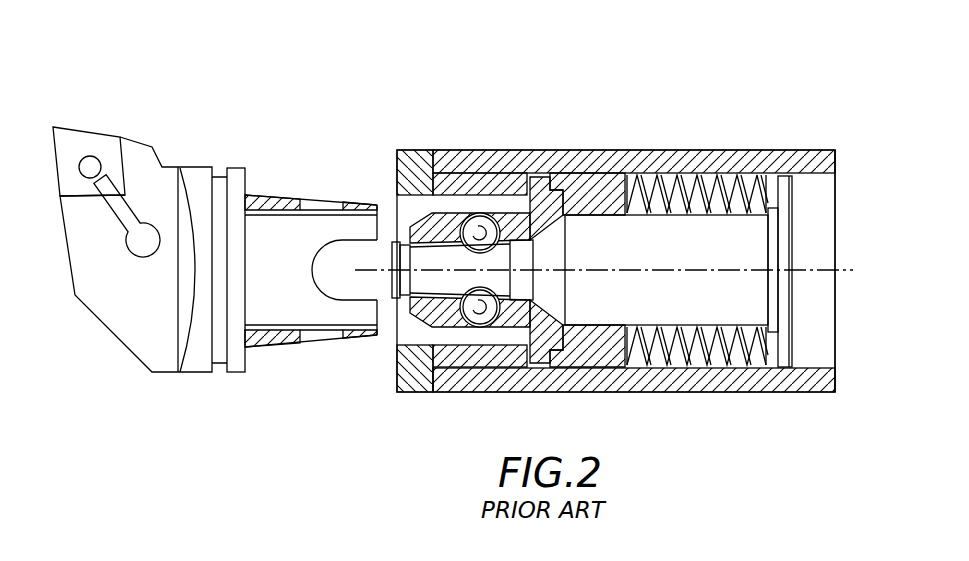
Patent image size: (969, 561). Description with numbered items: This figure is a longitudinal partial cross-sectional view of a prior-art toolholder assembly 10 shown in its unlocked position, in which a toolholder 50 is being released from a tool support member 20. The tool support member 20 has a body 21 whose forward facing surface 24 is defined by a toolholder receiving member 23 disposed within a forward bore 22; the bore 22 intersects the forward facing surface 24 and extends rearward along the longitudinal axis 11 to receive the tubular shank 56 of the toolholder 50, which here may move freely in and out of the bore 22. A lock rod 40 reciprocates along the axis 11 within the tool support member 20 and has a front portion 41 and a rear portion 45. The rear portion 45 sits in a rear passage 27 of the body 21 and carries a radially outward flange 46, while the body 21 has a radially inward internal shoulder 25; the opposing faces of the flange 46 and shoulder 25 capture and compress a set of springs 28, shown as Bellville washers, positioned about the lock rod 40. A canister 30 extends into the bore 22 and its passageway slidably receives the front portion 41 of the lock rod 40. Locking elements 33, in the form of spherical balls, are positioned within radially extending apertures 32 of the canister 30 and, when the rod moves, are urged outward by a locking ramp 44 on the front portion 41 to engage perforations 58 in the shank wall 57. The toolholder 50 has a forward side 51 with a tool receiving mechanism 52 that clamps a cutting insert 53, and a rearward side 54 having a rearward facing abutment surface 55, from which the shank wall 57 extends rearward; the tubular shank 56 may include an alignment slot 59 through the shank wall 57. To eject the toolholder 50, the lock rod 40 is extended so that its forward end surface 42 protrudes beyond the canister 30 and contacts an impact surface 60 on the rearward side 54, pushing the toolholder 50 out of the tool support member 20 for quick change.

The toolholder assembly 10 is at (695, 112).
The longitudinal axis 11 is at (842, 267).
The tool support member 20 is at (742, 148).
The body 21 is at (753, 393).
The forward bore 22 is at (397, 200).
The toolholder receiving member 23 is at (420, 393).
The forward facing surface 24 is at (397, 356).
The internal shoulder 25 is at (593, 347).
The rear passage 27 is at (815, 177).
The springs 28 is at (766, 185).
The canister 30 is at (443, 213).
The apertures 32 is at (515, 322).
The locking elements 33 is at (481, 214).
The lock rod 40 is at (597, 240).
The front portion 41 is at (415, 230).
The forward end surface 42 is at (392, 285).
The locking ramp 44 is at (458, 251).
The rear portion 45 is at (712, 312).
The flange 46 is at (787, 355).
The toolholder 50 is at (44, 132).
The forward side 51 is at (70, 270).
The tool receiving mechanism 52 is at (101, 222).
The cutting insert 53 is at (78, 127).
The rearward side 54 is at (232, 168).
The rearward facing abutment surface 55 is at (247, 182).
The tubular shank 56 is at (357, 200).
The shank wall 57 is at (268, 349).
The perforations 58 is at (310, 202).
The alignment slot 59 is at (320, 265).
The impact surface 60 is at (250, 257).